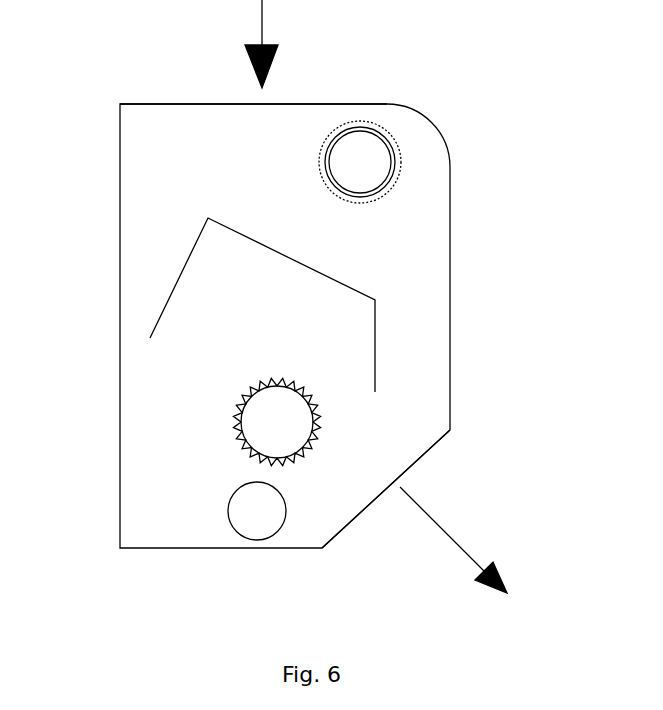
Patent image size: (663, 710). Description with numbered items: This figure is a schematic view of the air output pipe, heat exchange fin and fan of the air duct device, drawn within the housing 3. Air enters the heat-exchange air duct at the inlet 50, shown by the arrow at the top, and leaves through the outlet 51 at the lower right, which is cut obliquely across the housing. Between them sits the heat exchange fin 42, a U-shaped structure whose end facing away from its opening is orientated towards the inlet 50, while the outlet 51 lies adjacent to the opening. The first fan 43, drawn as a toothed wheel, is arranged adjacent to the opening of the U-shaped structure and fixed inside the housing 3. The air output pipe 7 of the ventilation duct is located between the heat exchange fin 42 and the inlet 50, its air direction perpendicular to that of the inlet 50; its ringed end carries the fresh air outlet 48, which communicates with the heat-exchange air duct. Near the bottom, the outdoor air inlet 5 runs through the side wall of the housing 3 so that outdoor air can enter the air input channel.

The housing 3 is at (450, 288).
The outdoor air inlet 5 is at (248, 510).
The air output pipe 7 is at (360, 128).
The heat exchange fin 42 is at (375, 357).
The first fan 43 is at (277, 421).
The fresh air outlet 48 is at (363, 172).
The inlet of the heat-exchange air duct 50 is at (188, 104).
The outlet of the heat-exchange air duct 51 is at (412, 462).